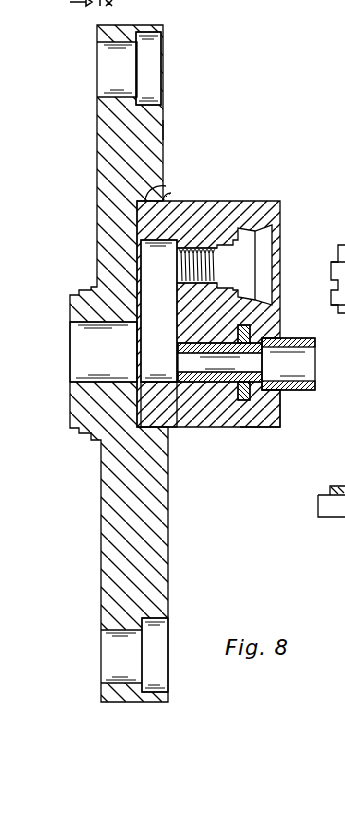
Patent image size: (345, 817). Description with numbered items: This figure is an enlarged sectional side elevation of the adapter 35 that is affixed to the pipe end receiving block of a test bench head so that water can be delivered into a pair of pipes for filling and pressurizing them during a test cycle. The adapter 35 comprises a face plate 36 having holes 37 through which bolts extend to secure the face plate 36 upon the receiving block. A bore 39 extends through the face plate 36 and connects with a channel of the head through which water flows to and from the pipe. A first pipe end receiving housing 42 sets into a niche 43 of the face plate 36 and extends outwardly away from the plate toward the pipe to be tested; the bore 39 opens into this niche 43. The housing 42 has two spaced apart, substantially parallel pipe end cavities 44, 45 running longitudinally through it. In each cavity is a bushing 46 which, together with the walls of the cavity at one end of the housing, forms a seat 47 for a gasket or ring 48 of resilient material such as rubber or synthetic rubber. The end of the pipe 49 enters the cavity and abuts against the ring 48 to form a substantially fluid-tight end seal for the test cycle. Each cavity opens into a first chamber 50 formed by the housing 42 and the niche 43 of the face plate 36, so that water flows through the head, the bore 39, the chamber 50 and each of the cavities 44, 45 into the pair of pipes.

The adapter 35 is at (163, 128).
The face plate 36 is at (97, 125).
The holes 37 is at (100, 50).
The bore 39 is at (80, 382).
The first pipe end receiving housing 42 is at (276, 201).
The niche 43 is at (166, 186).
The pipe end cavity 44 is at (213, 243).
The pipe end cavity 45 is at (212, 383).
The bushing 46 is at (241, 399).
The seat 47 is at (250, 330).
The gasket or ring 48 is at (282, 418).
The pipe 49 is at (313, 392).
The first chamber 50 is at (166, 380).